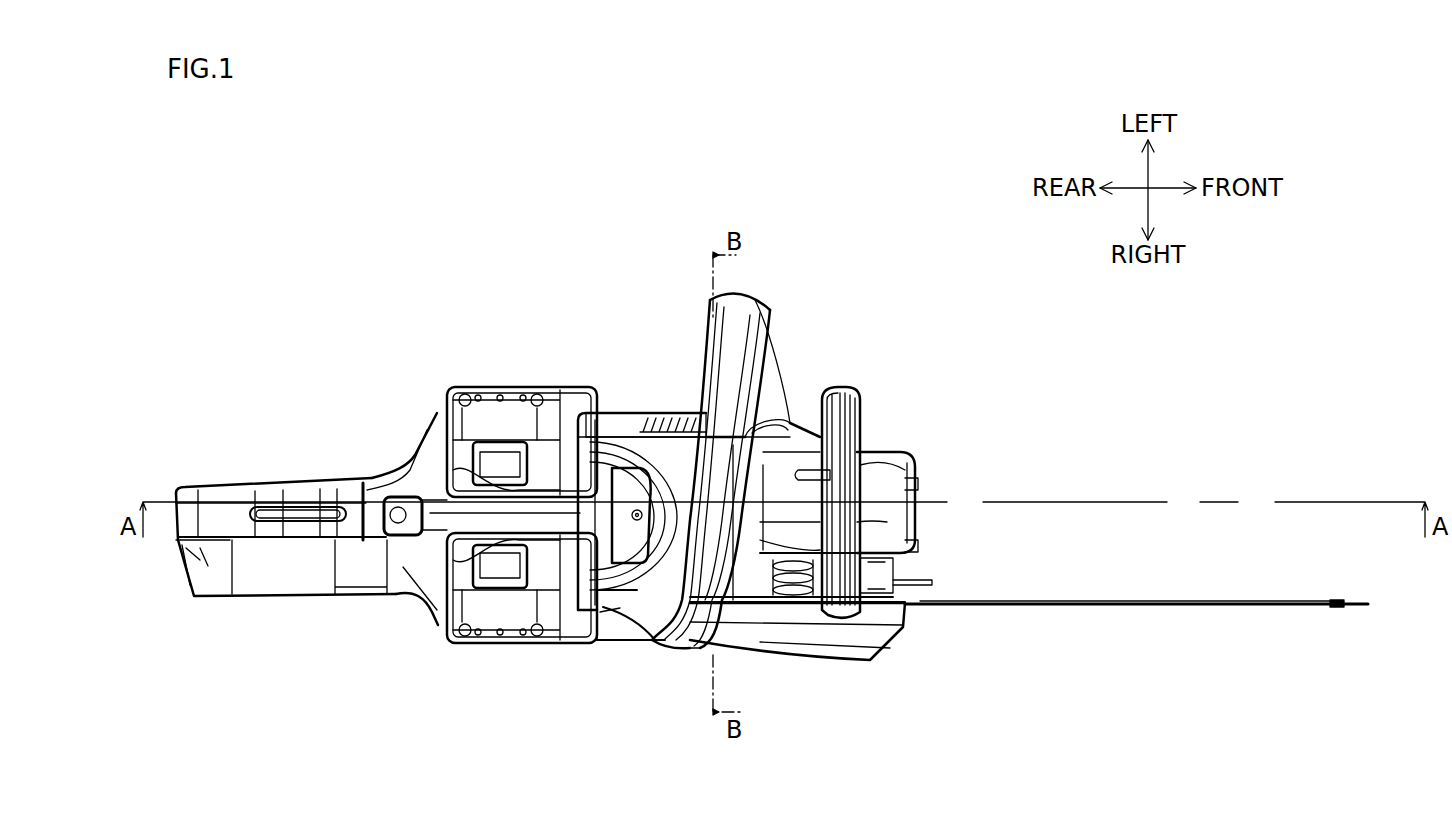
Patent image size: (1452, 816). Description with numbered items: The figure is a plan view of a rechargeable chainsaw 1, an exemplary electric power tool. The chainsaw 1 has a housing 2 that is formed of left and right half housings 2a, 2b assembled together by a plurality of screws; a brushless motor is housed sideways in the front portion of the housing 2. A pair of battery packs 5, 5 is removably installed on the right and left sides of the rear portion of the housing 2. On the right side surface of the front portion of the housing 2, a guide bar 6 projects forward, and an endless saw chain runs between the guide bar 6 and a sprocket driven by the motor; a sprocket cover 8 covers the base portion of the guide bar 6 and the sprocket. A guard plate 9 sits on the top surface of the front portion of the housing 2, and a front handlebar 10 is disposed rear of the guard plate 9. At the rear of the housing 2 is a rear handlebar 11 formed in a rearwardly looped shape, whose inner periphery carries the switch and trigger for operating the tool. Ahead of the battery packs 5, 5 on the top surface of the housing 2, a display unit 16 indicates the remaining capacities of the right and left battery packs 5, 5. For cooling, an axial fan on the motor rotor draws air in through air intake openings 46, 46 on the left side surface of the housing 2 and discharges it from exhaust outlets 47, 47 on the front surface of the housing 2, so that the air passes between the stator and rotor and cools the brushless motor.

The chainsaw 1 is at (888, 266).
The housing 2 is at (660, 410).
The left half housing 2a is at (617, 412).
The right half housing 2b is at (632, 645).
The battery pack 5 is at (503, 387).
The guide bar 6 is at (1120, 606).
The sprocket cover 8 is at (770, 640).
The guard plate 9 is at (846, 390).
The front handlebar 10 is at (760, 300).
The rear handlebar 11 is at (226, 493).
The display unit 16 is at (600, 430).
The air intake opening 46 is at (692, 415).
The exhaust outlet 47 is at (920, 484).